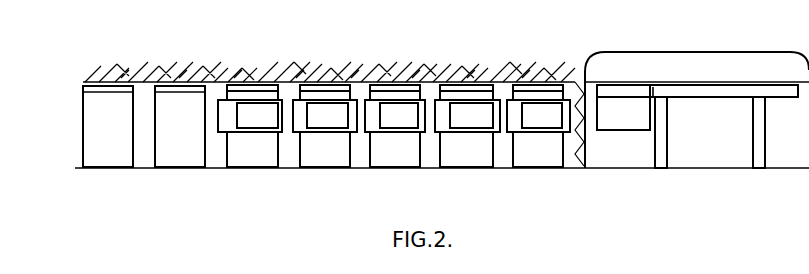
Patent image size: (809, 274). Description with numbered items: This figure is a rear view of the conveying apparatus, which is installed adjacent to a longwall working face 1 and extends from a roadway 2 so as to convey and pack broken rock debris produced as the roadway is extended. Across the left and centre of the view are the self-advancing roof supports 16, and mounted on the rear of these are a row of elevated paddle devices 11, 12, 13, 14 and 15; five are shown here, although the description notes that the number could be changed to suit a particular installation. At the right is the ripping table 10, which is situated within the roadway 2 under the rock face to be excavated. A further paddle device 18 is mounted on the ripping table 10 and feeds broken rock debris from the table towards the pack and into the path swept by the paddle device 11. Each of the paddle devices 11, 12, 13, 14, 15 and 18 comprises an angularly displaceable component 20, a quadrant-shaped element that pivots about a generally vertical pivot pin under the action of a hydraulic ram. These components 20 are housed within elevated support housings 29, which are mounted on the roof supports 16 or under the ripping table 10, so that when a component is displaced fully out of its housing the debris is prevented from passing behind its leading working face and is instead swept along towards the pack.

The longwall working face 1 is at (136, 147).
The roadway 2 is at (727, 157).
The ripping table 10 is at (722, 90).
The paddle device 11 is at (517, 108).
The paddle device 12 is at (442, 112).
The paddle device 13 is at (370, 107).
The paddle device 14 is at (300, 108).
The paddle device 15 is at (225, 110).
The self-advancing roof supports 16 is at (257, 83).
The further paddle device 18 is at (612, 108).
The angularly displaceable component 20 is at (258, 122).
The support housing 29 is at (613, 123).